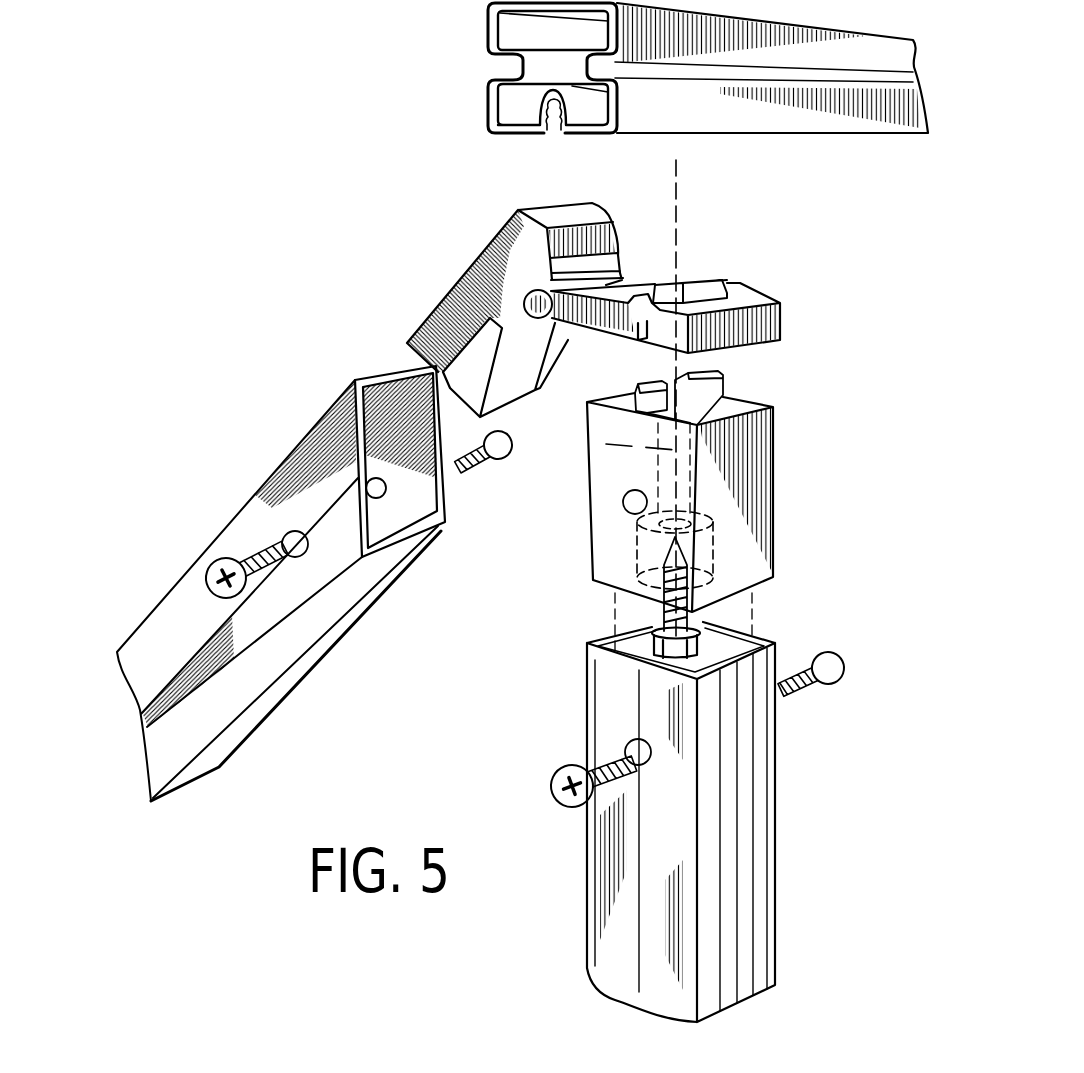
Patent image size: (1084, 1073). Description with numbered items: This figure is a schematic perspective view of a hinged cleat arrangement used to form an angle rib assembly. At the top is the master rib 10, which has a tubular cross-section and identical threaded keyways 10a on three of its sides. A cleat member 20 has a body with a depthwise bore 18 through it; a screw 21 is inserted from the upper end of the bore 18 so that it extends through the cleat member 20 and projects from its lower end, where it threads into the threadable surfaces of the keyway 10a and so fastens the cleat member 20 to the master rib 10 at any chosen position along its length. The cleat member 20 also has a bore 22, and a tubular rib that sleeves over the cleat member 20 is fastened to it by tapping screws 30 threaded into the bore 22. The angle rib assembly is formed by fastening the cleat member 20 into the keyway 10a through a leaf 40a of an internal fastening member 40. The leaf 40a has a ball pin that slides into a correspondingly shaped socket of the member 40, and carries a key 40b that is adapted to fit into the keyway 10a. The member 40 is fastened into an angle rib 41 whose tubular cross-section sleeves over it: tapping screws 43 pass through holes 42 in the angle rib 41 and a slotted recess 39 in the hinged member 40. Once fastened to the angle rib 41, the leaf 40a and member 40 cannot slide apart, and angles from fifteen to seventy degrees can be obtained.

The master rib 10 is at (474, 112).
The threaded keyway 10a is at (553, 148).
The depthwise bore 18 is at (598, 442).
The cleat member 20 is at (796, 461).
The screw 21 is at (708, 615).
The bore 22 is at (623, 502).
The tapping screws 30 is at (842, 682).
The slotted recess 39 is at (483, 337).
The internal fastening member 40 is at (452, 258).
The leaf 40a is at (800, 305).
The key 40b is at (720, 284).
The angle rib 41 is at (243, 480).
The holes 42 is at (379, 494).
The tapping screws 43 is at (208, 568).